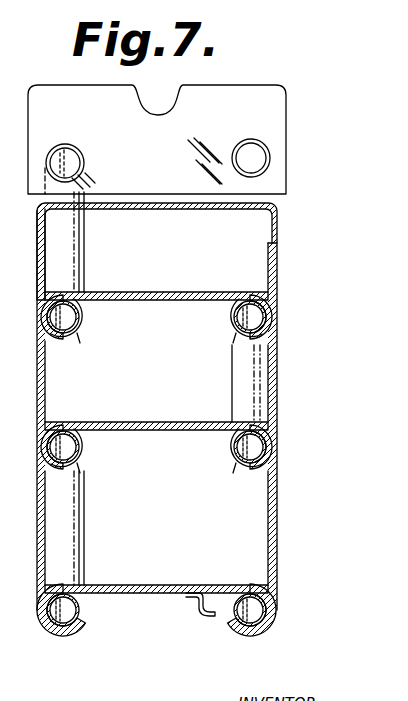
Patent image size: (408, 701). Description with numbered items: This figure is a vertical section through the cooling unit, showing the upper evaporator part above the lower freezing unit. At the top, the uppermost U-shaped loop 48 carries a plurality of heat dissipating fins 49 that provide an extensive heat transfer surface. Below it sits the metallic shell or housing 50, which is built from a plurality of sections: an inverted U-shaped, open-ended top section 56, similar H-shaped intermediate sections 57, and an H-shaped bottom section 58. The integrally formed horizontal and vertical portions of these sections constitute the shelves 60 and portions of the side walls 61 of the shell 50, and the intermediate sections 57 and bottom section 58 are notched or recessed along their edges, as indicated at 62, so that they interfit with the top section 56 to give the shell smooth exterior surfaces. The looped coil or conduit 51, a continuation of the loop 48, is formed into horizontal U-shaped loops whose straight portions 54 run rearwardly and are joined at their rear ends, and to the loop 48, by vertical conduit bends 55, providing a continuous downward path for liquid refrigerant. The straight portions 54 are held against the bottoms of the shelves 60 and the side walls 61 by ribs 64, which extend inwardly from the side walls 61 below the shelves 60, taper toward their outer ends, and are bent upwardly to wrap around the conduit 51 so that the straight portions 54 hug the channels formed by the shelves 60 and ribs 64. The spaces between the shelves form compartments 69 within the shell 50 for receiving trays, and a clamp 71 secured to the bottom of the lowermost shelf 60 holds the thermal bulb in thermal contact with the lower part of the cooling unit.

The U-shaped loop 48 is at (251, 140).
The heat dissipating elements or fins 49 is at (279, 104).
The metallic shell or housing 50 is at (283, 478).
The looped coil or conduit 51 is at (264, 316).
The straight portions 54 is at (82, 314).
The vertical conduit bends 55 is at (82, 238).
The top section 56 is at (280, 213).
The intermediate sections 57 is at (278, 290).
The bottom section 58 is at (278, 553).
The shelves 60 is at (176, 292).
The side walls 61 is at (278, 356).
The notches or recesses 62 is at (37, 254).
The ribs 64 is at (83, 337).
The compartments 69 is at (180, 254).
The clamp 71 is at (200, 612).